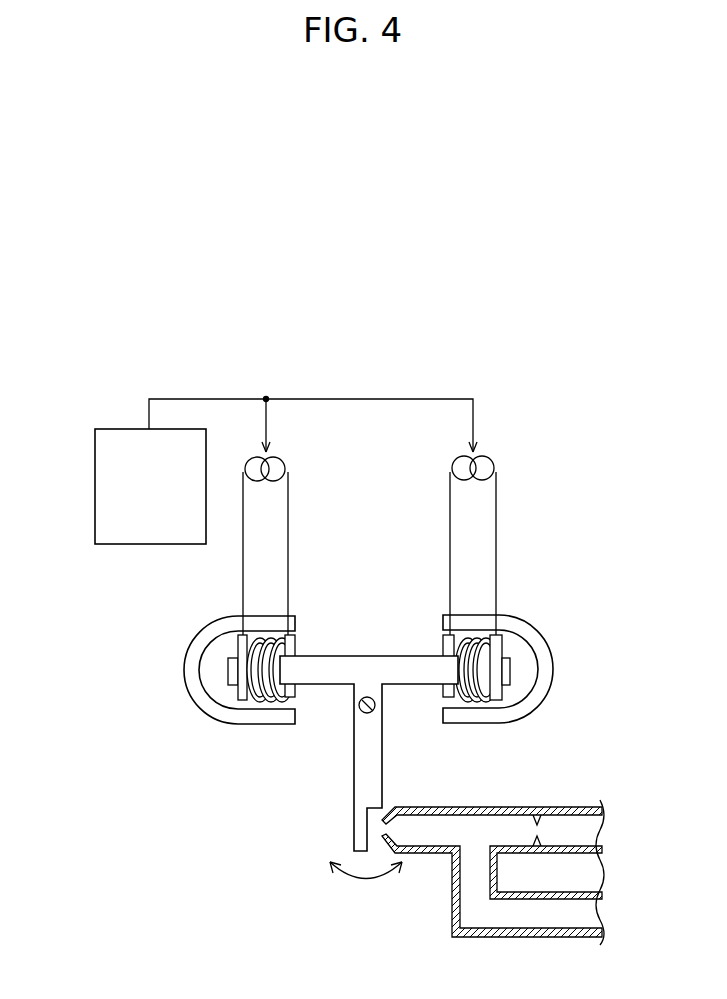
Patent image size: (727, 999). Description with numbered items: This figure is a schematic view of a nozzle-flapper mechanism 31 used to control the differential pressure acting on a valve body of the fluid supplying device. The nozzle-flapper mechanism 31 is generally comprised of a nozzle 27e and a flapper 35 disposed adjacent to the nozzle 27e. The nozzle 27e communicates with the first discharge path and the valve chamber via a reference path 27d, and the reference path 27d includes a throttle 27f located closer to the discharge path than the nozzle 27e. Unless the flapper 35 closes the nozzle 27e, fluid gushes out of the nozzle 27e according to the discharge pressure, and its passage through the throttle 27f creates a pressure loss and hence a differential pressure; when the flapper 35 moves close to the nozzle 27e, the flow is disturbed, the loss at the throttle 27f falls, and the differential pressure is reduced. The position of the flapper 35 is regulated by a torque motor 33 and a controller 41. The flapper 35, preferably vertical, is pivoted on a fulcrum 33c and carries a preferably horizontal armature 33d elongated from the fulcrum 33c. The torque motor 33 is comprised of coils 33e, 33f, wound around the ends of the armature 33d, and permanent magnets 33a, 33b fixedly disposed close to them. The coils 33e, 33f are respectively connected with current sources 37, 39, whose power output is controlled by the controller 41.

The nozzle-flapper mechanism 31 is at (285, 338).
The torque motor 33 is at (580, 603).
The permanent magnet 33a is at (540, 700).
The permanent magnet 33b is at (245, 725).
The fulcrum 33c is at (373, 711).
The armature 33d is at (510, 668).
The coil 33e is at (492, 698).
The coil 33f is at (241, 697).
The flapper 35 is at (372, 767).
The current source 37 is at (496, 466).
The current source 39 is at (286, 466).
The controller 41 is at (95, 480).
The reference path 27d is at (452, 912).
The nozzle 27e is at (382, 832).
The throttle 27f is at (540, 820).